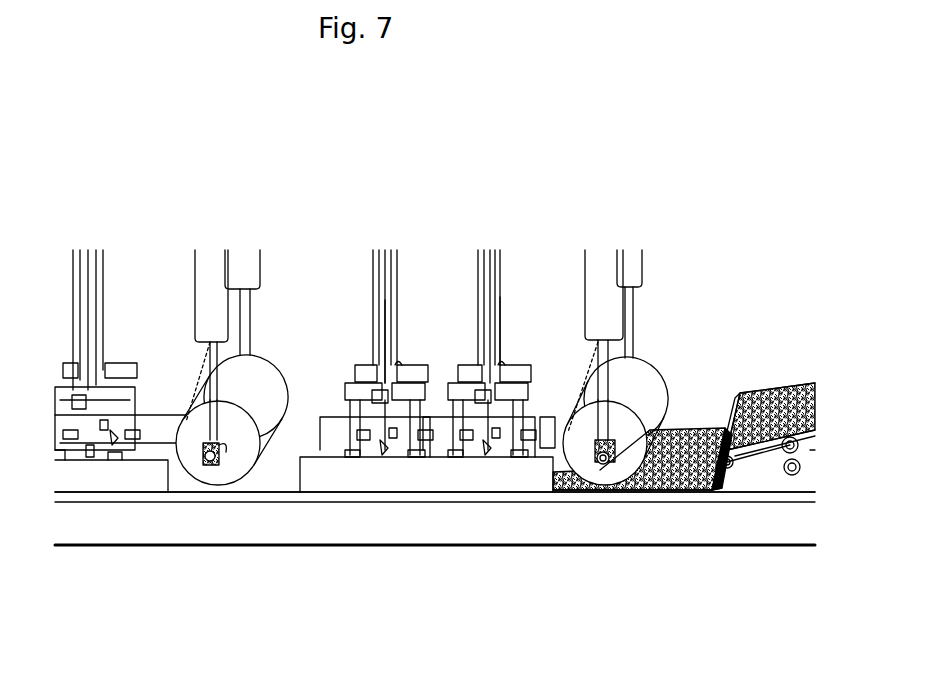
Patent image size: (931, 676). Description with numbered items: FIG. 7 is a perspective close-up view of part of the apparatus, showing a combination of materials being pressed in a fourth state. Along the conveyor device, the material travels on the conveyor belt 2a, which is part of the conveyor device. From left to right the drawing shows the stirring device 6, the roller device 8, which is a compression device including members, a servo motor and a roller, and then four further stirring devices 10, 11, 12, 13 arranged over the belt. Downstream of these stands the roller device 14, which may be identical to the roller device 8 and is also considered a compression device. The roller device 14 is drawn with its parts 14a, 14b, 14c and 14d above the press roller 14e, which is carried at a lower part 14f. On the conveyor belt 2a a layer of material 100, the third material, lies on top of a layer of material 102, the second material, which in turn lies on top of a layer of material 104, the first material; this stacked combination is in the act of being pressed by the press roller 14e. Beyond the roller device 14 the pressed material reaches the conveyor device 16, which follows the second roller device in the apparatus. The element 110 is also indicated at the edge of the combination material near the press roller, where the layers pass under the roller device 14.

The stirring device 6 is at (68, 320).
The roller device 8 is at (185, 310).
The stirring device 10 is at (367, 320).
The stirring device 11 is at (397, 338).
The stirring device 12 is at (473, 325).
The stirring device 13 is at (500, 297).
The roller device 14 is at (594, 383).
The secondary cylinder 14a is at (635, 265).
The secondary piston rod 14b is at (628, 338).
The main cylinder 14c is at (600, 275).
The main piston rod 14d is at (602, 387).
The press roller 14e is at (647, 388).
The roller axle 14f is at (597, 462).
The conveyor device 16 is at (777, 383).
The layer of material 100 is at (783, 383).
The layer of material 102 is at (660, 482).
The layer of material 104 is at (642, 488).
The support edge 110 is at (680, 483).
The conveyor belt 2a is at (735, 482).